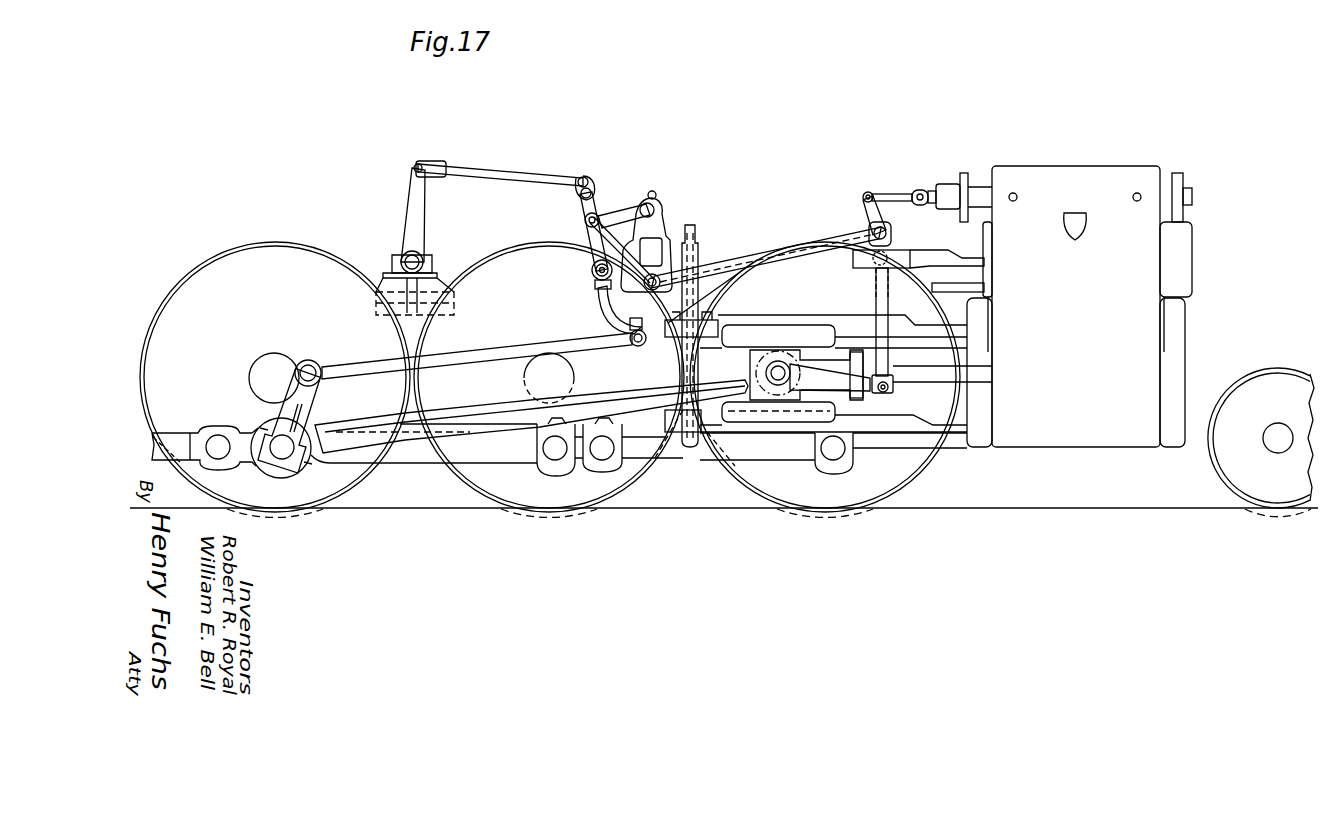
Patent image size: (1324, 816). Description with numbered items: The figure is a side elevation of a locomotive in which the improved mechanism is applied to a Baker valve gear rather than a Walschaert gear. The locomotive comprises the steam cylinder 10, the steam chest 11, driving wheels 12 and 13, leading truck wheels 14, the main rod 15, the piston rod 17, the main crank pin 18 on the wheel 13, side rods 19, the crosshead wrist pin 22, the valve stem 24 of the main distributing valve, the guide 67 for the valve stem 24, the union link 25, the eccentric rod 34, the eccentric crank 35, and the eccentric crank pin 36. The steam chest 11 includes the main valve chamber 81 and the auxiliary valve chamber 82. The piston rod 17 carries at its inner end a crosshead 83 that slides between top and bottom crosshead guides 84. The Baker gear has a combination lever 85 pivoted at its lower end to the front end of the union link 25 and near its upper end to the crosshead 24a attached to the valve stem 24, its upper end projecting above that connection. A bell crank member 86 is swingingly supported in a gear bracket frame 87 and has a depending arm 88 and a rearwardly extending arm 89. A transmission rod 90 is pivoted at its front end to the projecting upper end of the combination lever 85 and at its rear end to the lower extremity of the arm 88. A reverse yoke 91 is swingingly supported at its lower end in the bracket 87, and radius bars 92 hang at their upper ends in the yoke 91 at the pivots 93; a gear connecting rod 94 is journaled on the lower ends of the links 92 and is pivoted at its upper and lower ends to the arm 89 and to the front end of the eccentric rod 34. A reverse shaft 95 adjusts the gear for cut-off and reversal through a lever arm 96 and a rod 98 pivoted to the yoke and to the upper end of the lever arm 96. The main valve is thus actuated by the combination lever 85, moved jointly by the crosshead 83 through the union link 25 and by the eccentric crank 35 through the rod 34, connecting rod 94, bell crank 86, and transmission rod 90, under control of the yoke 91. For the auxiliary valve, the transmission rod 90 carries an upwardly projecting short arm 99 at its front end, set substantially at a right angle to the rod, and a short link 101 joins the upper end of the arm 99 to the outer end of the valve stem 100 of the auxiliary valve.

The steam cylinder 10 is at (1183, 348).
The steam chest 11 is at (1190, 248).
The driving wheels 12 is at (605, 506).
The driving wheel 13 is at (356, 479).
The leading truck wheels 14 is at (1309, 506).
The main rod 15 is at (599, 393).
The piston rod 17 is at (940, 380).
The main crank pin 18 is at (282, 447).
The side rods 19 is at (154, 440).
The crosshead wrist pin 22 is at (772, 369).
The valve stem 24 is at (926, 252).
The crosshead 24a is at (857, 266).
The union link 25 is at (826, 370).
The eccentric rod 34 is at (483, 355).
The eccentric crank 35 is at (313, 403).
The eccentric crank pin 36 is at (312, 362).
The guide 67 is at (950, 284).
The main valve chamber 81 is at (1175, 291).
The auxiliary valve chamber 82 is at (1166, 170).
The crosshead 83 is at (838, 405).
The crosshead guides 84 is at (787, 325).
The combination lever 85 is at (888, 302).
The bell crank member 86 is at (615, 212).
The gear bracket frame 87 is at (673, 222).
The depending arm 88 is at (698, 241).
The rearwardly extending arm 89 is at (592, 212).
The transmission rod 90 is at (773, 249).
The reverse yoke 91 is at (591, 270).
The radius bars 92 is at (632, 222).
The pivotal connection 93 is at (585, 220).
The gear connecting rod 94 is at (608, 311).
The reverse shaft 95 is at (420, 257).
The lever arm 96 is at (424, 218).
The rod 98 is at (503, 173).
The short arm 99 is at (869, 213).
The valve stem 100 is at (927, 185).
The short link 101 is at (891, 192).